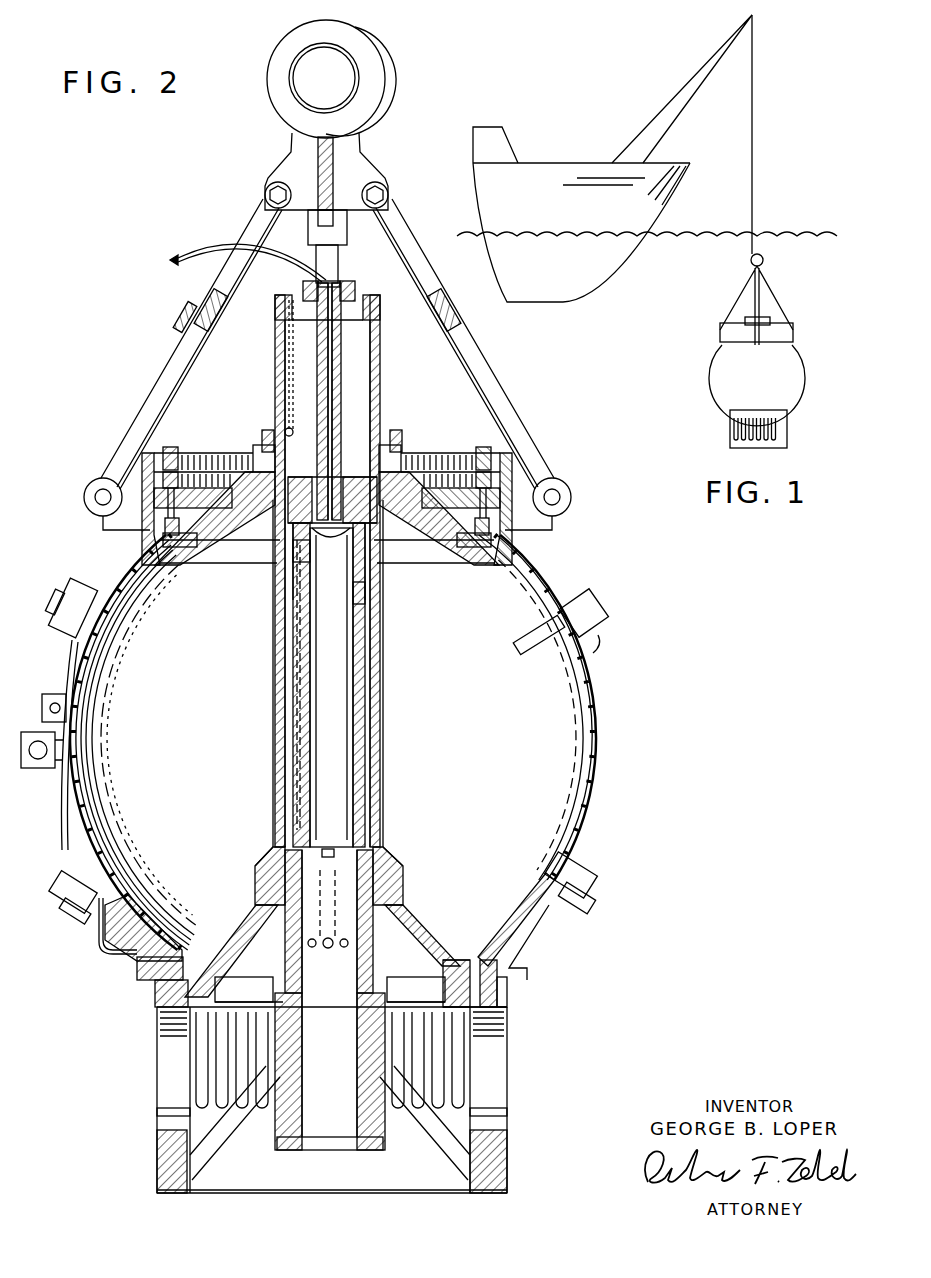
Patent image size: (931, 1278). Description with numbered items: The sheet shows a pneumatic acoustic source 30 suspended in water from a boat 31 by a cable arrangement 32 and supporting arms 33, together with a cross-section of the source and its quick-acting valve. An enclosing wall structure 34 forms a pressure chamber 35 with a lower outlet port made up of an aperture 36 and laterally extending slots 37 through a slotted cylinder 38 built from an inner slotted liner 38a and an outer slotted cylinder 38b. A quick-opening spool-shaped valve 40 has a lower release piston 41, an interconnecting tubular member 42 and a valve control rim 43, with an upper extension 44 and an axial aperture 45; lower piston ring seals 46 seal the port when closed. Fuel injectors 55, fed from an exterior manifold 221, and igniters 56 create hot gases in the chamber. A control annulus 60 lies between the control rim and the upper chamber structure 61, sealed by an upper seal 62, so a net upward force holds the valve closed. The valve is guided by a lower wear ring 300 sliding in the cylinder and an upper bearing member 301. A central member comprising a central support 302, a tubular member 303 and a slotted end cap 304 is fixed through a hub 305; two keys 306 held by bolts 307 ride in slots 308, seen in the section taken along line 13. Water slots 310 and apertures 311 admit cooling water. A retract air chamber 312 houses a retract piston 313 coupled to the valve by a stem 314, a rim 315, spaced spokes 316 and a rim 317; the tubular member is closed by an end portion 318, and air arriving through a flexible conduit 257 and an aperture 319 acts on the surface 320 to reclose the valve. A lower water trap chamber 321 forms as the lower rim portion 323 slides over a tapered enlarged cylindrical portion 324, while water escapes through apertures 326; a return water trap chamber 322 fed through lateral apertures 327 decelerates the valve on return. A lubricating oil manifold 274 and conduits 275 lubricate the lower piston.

In FIG. 2, the flexible conduit 257 is at (190, 248).
In FIG. 2, the spaced spokes 316 is at (352, 282).
In FIG. 2, the rim 315 is at (310, 300).
In FIG. 2, the rim 317 is at (364, 300).
In FIG. 2, the aperture 45 is at (308, 340).
In FIG. 2, the upper extension 44 is at (380, 340).
In FIG. 2, the aperture 319 is at (341, 366).
In FIG. 2, the stem 314 is at (342, 393).
In FIG. 2, the upper bearing member 301 is at (285, 430).
In FIG. 2, the slotted end cap 304 is at (312, 487).
In FIG. 2, the return water trap chamber 322 is at (394, 446).
In FIG. 2, the upper chamber structure 61 is at (442, 490).
In FIG. 2, the upper seal 62 is at (520, 499).
In FIG. 2, the laterally extending apertures 327 is at (366, 551).
In FIG. 2, the valve control rim 43 is at (432, 530).
In FIG. 2, the retract piston 313 is at (362, 597).
In FIG. 2, the surface of retract piston 320 is at (346, 630).
In FIG. 2, the control annulus 60 is at (240, 513).
In FIG. 2, the fuel injectors 55 is at (60, 600).
In FIG. 2, the lubricating oil manifold 274 is at (44, 700).
In FIG. 2, the exterior manifold 221 is at (37, 760).
In FIG. 2, the quick-opening spool-shaped valve 40 is at (274, 716).
In FIG. 2, the pressure chamber 35 is at (501, 707).
In FIG. 2, the enclosing wall structure 34 is at (596, 721).
In FIG. 2, the retract air chamber 312 is at (305, 772).
In FIG. 2, the tubular member 303 is at (305, 791).
In FIG. 2, the interconnecting tubular member 42 is at (385, 784).
In FIG. 2, the section line 13 is at (445, 840).
In FIG. 2, the slots 308 is at (263, 862).
In FIG. 2, the end portion 318 is at (350, 856).
In FIG. 2, the lower water trap chamber 321 is at (278, 906).
In FIG. 2, the lower rim portion 323 is at (405, 889).
In FIG. 2, the lower release piston 41 is at (437, 944).
In FIG. 2, the igniters 56 is at (58, 895).
In FIG. 2, the conduits 275 is at (97, 945).
In FIG. 2, the bolts 307 is at (283, 953).
In FIG. 2, the keys 306 is at (282, 975).
In FIG. 2, the water slots 310 is at (324, 949).
In FIG. 2, the apertures 311 is at (334, 950).
In FIG. 2, the aperture 36 is at (156, 1007).
In FIG. 2, the laterally extending slots 37 is at (168, 1048).
In FIG. 2, the slotted cylinder 38 is at (157, 1107).
In FIG. 2, the central support 302 is at (302, 1040).
In FIG. 2, the enlarged cylindrical portion 324 is at (382, 1027).
In FIG. 2, the lower wear ring 300 is at (482, 1022).
In FIG. 2, the lower piston ring seals 46 is at (503, 977).
In FIG. 2, the inner slotted liner 38a is at (482, 1110).
In FIG. 2, the outer slotted cylinder 38b is at (507, 1131).
In FIG. 2, the hub 305 is at (214, 1165).
In FIG. 2, the apertures 326 is at (433, 1133).
In FIG. 1, the cable arrangement 32 is at (758, 172).
In FIG. 1, the boat 31 is at (558, 303).
In FIG. 1, the supporting arms 33 is at (737, 293).
In FIG. 1, the acoustic source 30 is at (710, 377).